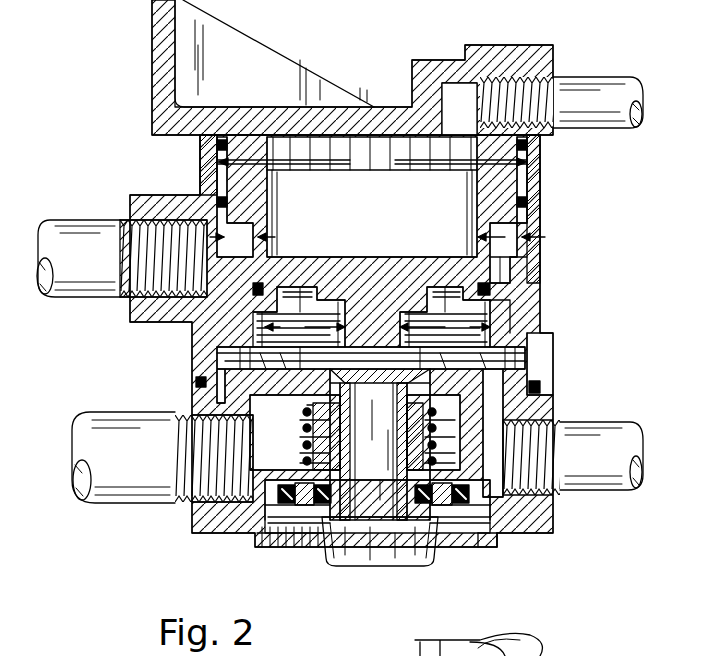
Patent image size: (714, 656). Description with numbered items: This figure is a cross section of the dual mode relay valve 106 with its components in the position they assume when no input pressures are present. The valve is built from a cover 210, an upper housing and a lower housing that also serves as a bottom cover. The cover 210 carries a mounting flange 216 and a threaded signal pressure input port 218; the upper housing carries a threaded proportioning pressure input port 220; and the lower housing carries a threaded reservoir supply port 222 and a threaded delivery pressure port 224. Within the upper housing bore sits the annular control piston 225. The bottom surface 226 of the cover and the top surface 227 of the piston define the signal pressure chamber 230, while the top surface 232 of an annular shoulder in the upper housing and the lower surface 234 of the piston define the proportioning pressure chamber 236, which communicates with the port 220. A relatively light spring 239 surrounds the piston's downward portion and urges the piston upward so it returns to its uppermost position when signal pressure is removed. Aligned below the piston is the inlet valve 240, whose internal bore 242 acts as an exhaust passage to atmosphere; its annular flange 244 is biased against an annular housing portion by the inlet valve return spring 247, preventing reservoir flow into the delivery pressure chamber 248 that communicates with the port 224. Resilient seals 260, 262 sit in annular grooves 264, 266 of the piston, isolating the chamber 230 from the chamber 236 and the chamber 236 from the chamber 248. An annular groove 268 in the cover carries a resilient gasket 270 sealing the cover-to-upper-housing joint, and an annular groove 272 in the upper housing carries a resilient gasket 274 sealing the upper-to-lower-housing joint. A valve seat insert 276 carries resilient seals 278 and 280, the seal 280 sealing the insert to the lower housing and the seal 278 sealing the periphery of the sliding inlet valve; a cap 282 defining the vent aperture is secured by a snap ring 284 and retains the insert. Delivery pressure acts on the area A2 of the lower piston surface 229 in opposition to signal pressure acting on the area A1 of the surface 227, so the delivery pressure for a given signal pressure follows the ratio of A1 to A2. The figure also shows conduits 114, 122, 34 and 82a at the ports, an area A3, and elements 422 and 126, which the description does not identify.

The dual mode relay valve 106 is at (630, 197).
The conduit 114 is at (598, 108).
The conduit 122 is at (147, 455).
The conduit 34 is at (609, 455).
The conduit 82a is at (100, 256).
The cover 210 is at (348, 62).
The mounting flange 216 is at (152, 71).
The threaded signal pressure input port 218 is at (549, 80).
The threaded proportioning pressure input port 220 is at (122, 230).
The threaded reservoir supply port 222 is at (215, 535).
The threaded delivery pressure port 224 is at (562, 495).
The annular control piston 225 is at (402, 302).
The bottom surface of the cover 226 is at (398, 138).
The top surface of the control piston 227 is at (395, 258).
The lower control piston surface 229 is at (255, 324).
The signal pressure chamber 230 is at (388, 209).
The top surface of the annular shoulder 232 is at (542, 275).
The lower surface of the control piston 234 is at (535, 247).
The proportioning pressure chamber 236 is at (250, 268).
The relatively light spring 239 is at (278, 369).
The inlet valve 240 is at (348, 400).
The bore 242 is at (398, 456).
The annular flange 244 is at (299, 436).
The inlet valve return spring 247 is at (460, 445).
The delivery pressure chamber 248 is at (490, 362).
The resilient seal 260 is at (542, 200).
The resilient seal 262 is at (538, 287).
The annular groove 264 is at (541, 168).
The annular groove 266 is at (542, 316).
The annular groove 268 is at (541, 143).
The resilient gasket 270 is at (204, 158).
The annular groove 272 is at (541, 385).
The resilient gasket 274 is at (196, 383).
The valve seat insert 276 is at (478, 538).
The resilient seal 278 is at (445, 542).
The resilient seal 280 is at (516, 534).
The cap 282 is at (410, 566).
The snap ring 284 is at (278, 547).
The area A1 is at (372, 161).
The area A2 is at (377, 327).
The area dimension A3 is at (398, 235).
The element 422 is at (415, 650).
The element 126 is at (552, 652).